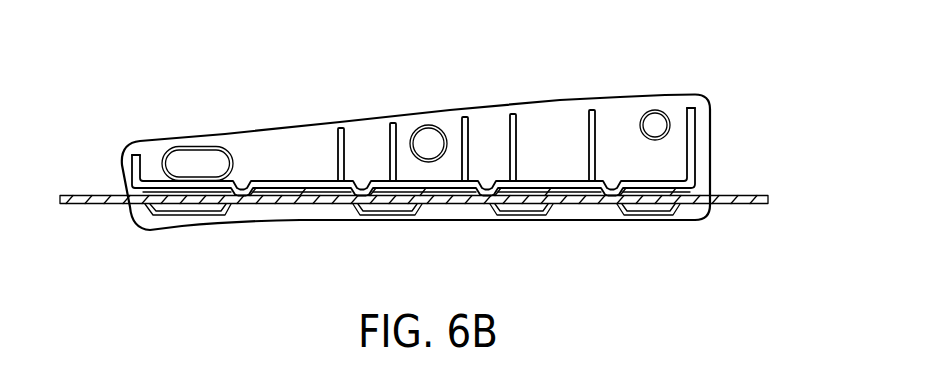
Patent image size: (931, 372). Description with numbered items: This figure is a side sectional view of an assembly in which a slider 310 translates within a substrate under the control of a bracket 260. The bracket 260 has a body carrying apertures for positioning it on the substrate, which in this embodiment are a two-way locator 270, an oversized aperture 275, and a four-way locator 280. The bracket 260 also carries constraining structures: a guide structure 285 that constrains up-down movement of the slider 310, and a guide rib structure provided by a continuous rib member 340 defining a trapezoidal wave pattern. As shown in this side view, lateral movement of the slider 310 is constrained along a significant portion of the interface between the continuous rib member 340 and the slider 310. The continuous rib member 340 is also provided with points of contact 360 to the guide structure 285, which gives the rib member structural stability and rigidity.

The bracket 260 is at (723, 84).
The two-way locator 270 is at (208, 147).
The oversized aperture 275 is at (428, 125).
The four-way locator 280 is at (654, 110).
The guide structure 285 is at (342, 127).
The slider 310 is at (73, 195).
The continuous rib member 340 is at (268, 189).
The points of contact 360 is at (142, 182).